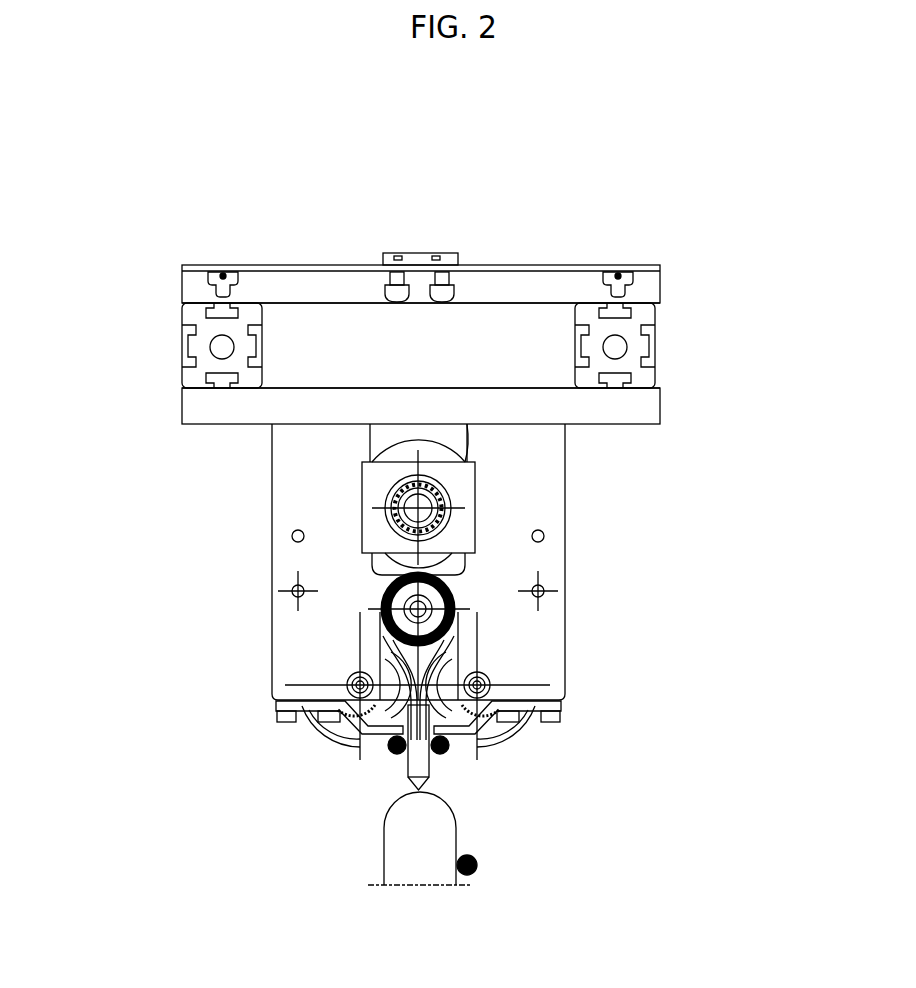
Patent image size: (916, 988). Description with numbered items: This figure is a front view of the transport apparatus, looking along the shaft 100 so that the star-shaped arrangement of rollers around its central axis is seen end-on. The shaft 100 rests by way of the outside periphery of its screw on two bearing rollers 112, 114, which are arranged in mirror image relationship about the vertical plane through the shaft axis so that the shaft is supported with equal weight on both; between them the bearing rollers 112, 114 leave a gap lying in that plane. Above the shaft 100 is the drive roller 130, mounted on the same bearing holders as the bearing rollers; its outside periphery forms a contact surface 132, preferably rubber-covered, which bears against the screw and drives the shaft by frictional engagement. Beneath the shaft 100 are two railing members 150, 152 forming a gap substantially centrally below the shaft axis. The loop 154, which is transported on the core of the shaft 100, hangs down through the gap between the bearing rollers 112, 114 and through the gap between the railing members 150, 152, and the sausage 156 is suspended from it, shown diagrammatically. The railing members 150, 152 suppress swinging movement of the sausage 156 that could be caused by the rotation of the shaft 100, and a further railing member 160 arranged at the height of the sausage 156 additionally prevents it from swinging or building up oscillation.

The shaft 100 is at (455, 601).
The bearing roller 112 is at (513, 730).
The bearing roller 114 is at (322, 728).
The drive roller 130 is at (394, 455).
The contact surface 132 is at (453, 455).
The railing member 150 is at (448, 755).
The railing member 152 is at (388, 753).
The loop 154 is at (388, 643).
The sausage 156 is at (405, 837).
The further railing member 160 is at (478, 870).